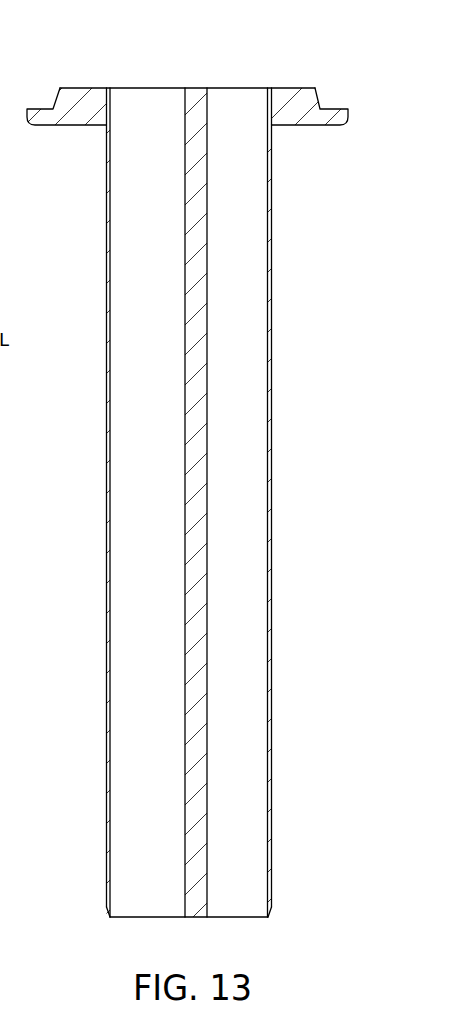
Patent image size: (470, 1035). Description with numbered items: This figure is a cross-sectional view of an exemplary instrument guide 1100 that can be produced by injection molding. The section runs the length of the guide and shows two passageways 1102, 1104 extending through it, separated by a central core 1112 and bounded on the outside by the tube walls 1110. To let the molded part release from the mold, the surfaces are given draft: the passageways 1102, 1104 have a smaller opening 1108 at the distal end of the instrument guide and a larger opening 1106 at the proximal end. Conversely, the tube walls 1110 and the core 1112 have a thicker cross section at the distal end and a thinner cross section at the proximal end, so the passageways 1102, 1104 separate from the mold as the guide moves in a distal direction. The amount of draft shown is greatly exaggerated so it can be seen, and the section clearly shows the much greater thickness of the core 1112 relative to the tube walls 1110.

The instrument guide 1100 is at (338, 71).
The passageway 1102 is at (147, 822).
The passageway 1104 is at (237, 827).
The larger opening 1106 is at (110, 105).
The smaller opening 1108 is at (112, 905).
The tube walls 1110 is at (106, 283).
The core 1112 is at (197, 88).